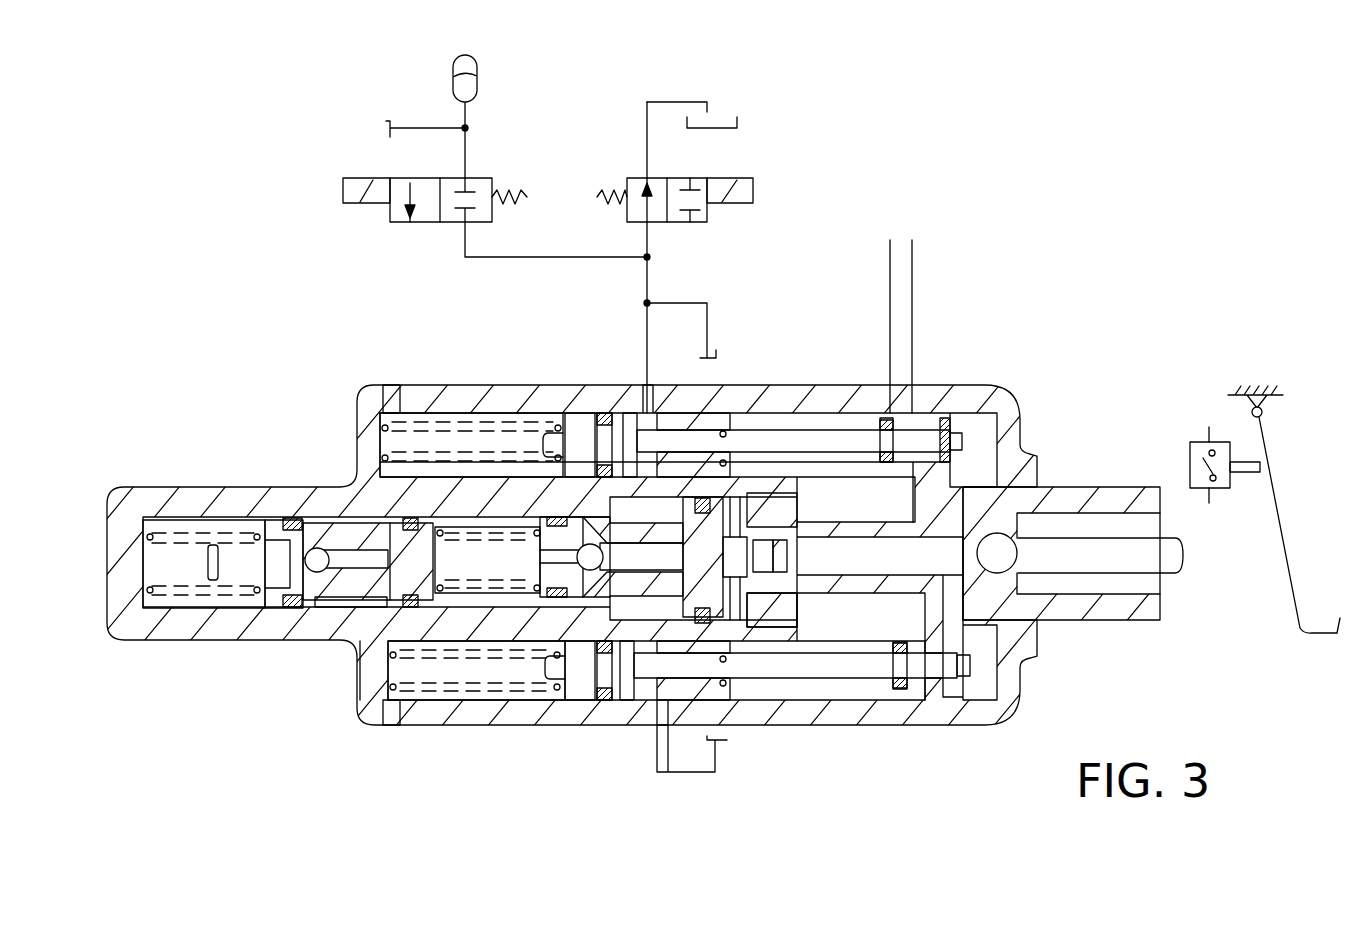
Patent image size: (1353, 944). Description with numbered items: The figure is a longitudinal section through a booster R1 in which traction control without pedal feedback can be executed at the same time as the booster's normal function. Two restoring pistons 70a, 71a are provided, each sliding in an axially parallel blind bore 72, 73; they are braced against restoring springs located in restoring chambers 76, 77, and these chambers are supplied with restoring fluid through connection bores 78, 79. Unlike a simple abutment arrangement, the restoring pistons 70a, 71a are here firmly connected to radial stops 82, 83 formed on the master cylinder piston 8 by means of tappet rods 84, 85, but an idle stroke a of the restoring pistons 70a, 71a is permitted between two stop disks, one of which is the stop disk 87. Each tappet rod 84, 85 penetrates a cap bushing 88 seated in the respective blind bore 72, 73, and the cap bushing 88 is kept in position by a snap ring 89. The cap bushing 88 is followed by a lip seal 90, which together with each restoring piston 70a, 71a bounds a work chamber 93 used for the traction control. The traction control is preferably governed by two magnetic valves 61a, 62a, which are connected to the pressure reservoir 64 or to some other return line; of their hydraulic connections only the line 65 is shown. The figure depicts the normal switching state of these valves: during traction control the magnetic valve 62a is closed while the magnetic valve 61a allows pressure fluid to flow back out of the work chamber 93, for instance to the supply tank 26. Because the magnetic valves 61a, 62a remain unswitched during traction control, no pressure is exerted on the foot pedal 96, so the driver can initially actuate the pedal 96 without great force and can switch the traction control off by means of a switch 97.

The master cylinder piston 8 is at (817, 600).
The supply tank 26 is at (740, 121).
The magnetic valve 61a is at (703, 179).
The magnetic valve 62a is at (427, 222).
The pressure reservoir 64 is at (478, 74).
The line 65 is at (421, 128).
The restoring piston 70a is at (580, 422).
The restoring piston 71a is at (574, 700).
The blind bore 72 is at (497, 412).
The blind bore 73 is at (466, 703).
The restoring chamber 76 is at (447, 425).
The restoring chamber 77 is at (427, 700).
The connection bore 78 is at (392, 396).
The connection bore 79 is at (394, 720).
The radial stop 82 is at (930, 497).
The radial stop 83 is at (1016, 667).
The tappet rod 84 is at (855, 437).
The tappet rod 85 is at (862, 680).
The stop disk 87 is at (945, 412).
The cap bushing 88 is at (720, 410).
The snap ring 89 is at (768, 410).
The lip seal 90 is at (677, 712).
The work chamber 93 is at (639, 410).
The foot pedal 96 is at (1288, 577).
The switch 97 is at (1191, 458).
The idle stroke a is at (978, 252).
The booster R1 is at (676, 484).